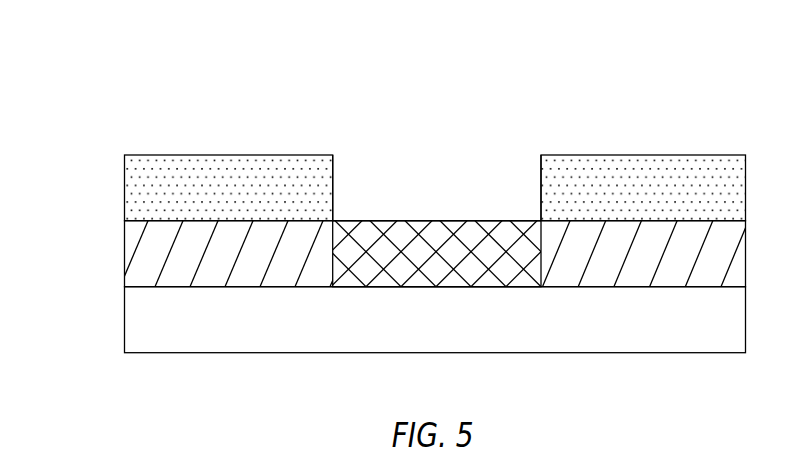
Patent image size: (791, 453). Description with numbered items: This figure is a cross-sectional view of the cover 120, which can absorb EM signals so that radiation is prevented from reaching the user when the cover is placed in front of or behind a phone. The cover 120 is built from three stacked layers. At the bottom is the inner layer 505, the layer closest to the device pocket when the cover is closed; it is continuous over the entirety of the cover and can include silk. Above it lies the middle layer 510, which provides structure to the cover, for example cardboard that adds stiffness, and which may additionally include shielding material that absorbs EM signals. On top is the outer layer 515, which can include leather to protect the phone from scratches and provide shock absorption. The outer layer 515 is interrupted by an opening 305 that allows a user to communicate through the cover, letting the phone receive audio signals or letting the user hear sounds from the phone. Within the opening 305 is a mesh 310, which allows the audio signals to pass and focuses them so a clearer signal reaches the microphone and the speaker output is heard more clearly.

The cover 120 is at (381, 189).
The opening 305 is at (407, 185).
The mesh 310 is at (526, 255).
The inner layer 505 is at (143, 320).
The middle layer 510 is at (142, 247).
The outer layer 515 is at (142, 190).